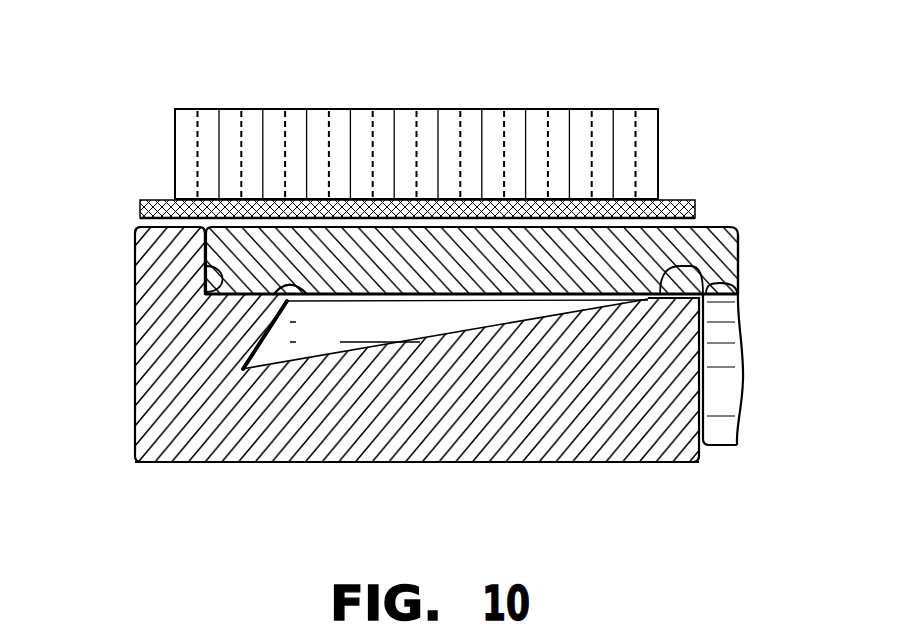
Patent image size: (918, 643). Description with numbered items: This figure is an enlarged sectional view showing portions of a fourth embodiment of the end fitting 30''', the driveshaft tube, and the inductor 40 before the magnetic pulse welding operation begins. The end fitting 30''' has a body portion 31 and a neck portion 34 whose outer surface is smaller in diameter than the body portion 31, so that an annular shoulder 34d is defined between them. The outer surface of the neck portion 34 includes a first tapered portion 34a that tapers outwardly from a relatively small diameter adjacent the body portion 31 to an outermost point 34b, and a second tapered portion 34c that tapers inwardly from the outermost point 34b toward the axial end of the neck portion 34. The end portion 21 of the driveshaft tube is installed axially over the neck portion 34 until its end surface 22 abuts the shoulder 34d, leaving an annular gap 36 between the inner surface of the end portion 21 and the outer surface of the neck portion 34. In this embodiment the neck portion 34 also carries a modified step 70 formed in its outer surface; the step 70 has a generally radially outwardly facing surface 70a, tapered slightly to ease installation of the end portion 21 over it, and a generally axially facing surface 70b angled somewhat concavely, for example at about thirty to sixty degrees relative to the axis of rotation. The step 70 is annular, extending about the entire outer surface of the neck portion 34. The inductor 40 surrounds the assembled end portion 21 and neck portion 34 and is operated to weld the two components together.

The inductor 40 is at (557, 110).
The end portion 21 is at (723, 249).
The end surface 22 is at (205, 248).
The body portion 31 is at (155, 435).
The neck portion 34 is at (663, 440).
The first tapered portion 34a is at (480, 330).
The outermost point 34b is at (733, 268).
The second tapered portion 34c is at (740, 293).
The annular shoulder 34d is at (207, 292).
The annular gap 36 is at (336, 349).
The modified step 70 is at (233, 321).
The generally radially outwardly facing surface 70a is at (570, 305).
The generally axially facing surface 70b is at (270, 337).
The end fitting 30''' is at (412, 540).